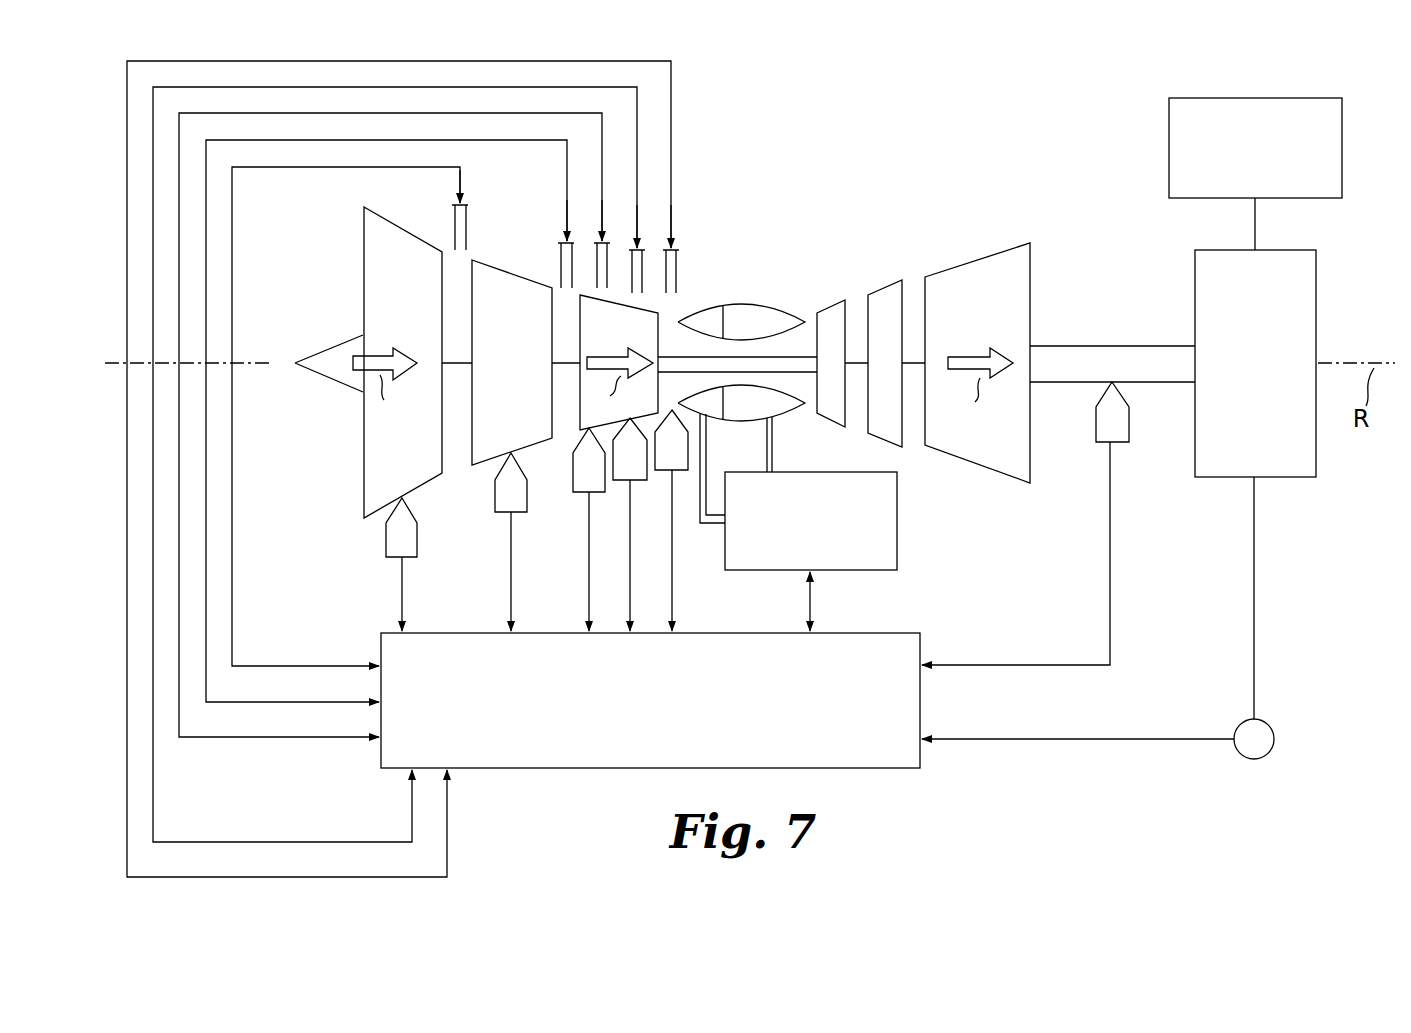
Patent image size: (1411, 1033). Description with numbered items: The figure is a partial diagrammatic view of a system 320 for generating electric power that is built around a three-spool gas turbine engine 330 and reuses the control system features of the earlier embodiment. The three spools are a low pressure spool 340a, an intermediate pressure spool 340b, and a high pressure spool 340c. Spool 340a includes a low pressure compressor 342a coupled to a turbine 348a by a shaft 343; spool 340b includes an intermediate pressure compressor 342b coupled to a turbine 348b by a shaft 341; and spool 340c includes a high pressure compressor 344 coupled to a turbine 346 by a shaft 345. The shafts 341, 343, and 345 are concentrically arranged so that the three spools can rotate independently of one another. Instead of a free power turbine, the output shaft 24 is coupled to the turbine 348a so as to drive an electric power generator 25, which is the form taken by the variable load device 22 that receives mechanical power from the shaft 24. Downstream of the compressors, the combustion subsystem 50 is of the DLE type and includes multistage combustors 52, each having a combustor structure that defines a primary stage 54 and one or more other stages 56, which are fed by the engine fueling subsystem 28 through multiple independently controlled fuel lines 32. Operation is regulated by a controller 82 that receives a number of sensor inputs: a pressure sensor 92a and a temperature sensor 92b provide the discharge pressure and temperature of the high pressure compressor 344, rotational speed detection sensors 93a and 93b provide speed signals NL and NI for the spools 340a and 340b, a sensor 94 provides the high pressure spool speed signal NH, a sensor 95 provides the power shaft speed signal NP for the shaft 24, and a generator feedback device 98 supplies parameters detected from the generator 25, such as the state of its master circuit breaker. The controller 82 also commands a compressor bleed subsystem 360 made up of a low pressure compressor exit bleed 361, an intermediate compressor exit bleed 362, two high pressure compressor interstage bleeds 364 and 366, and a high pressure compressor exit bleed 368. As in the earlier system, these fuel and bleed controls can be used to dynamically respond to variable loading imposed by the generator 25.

The system 320 is at (1138, 90).
The three-spool gas turbine engine 330 is at (1057, 260).
The variable load device 22 is at (1286, 458).
The shaft 24 is at (1120, 346).
The electric power generator 25 is at (1320, 292).
The engine fueling subsystem 28 is at (898, 548).
The fuel lines 32 is at (765, 432).
The combustion subsystem 50 is at (747, 322).
The multistage combustor 52 is at (778, 302).
The primary stage 54 is at (710, 364).
The other stages 56 is at (753, 364).
The controller 82 is at (650, 700).
The pressure sensor 92a is at (633, 482).
The temperature sensor 92b is at (675, 472).
The rotational speed detection sensor 93a is at (414, 559).
The rotational speed detection sensor 93b is at (501, 515).
The sensor 94 is at (578, 494).
The sensor 95 is at (1130, 447).
The generator feedback device 98 is at (1274, 744).
The low pressure spool 340a is at (360, 362).
The intermediate pressure spool 340b is at (501, 389).
The high pressure spool 340c is at (698, 362).
The shaft 341 is at (556, 367).
The low pressure compressor 342a is at (363, 446).
The intermediate pressure compressor 342b is at (488, 463).
The shaft 343 is at (450, 365).
The high pressure compressor 344 is at (619, 362).
The shaft 345 is at (705, 356).
The turbine 346 is at (834, 300).
The turbine 348a is at (977, 363).
The turbine 348b is at (882, 293).
The compressor bleed subsystem 360 is at (697, 225).
The low pressure compressor exit bleed 361 is at (453, 213).
The intermediate compressor exit bleed 362 is at (558, 262).
The high pressure compressor interstage bleed 364 is at (594, 258).
The high pressure compressor interstage bleed 366 is at (648, 262).
The high pressure compressor exit bleed 368 is at (680, 270).